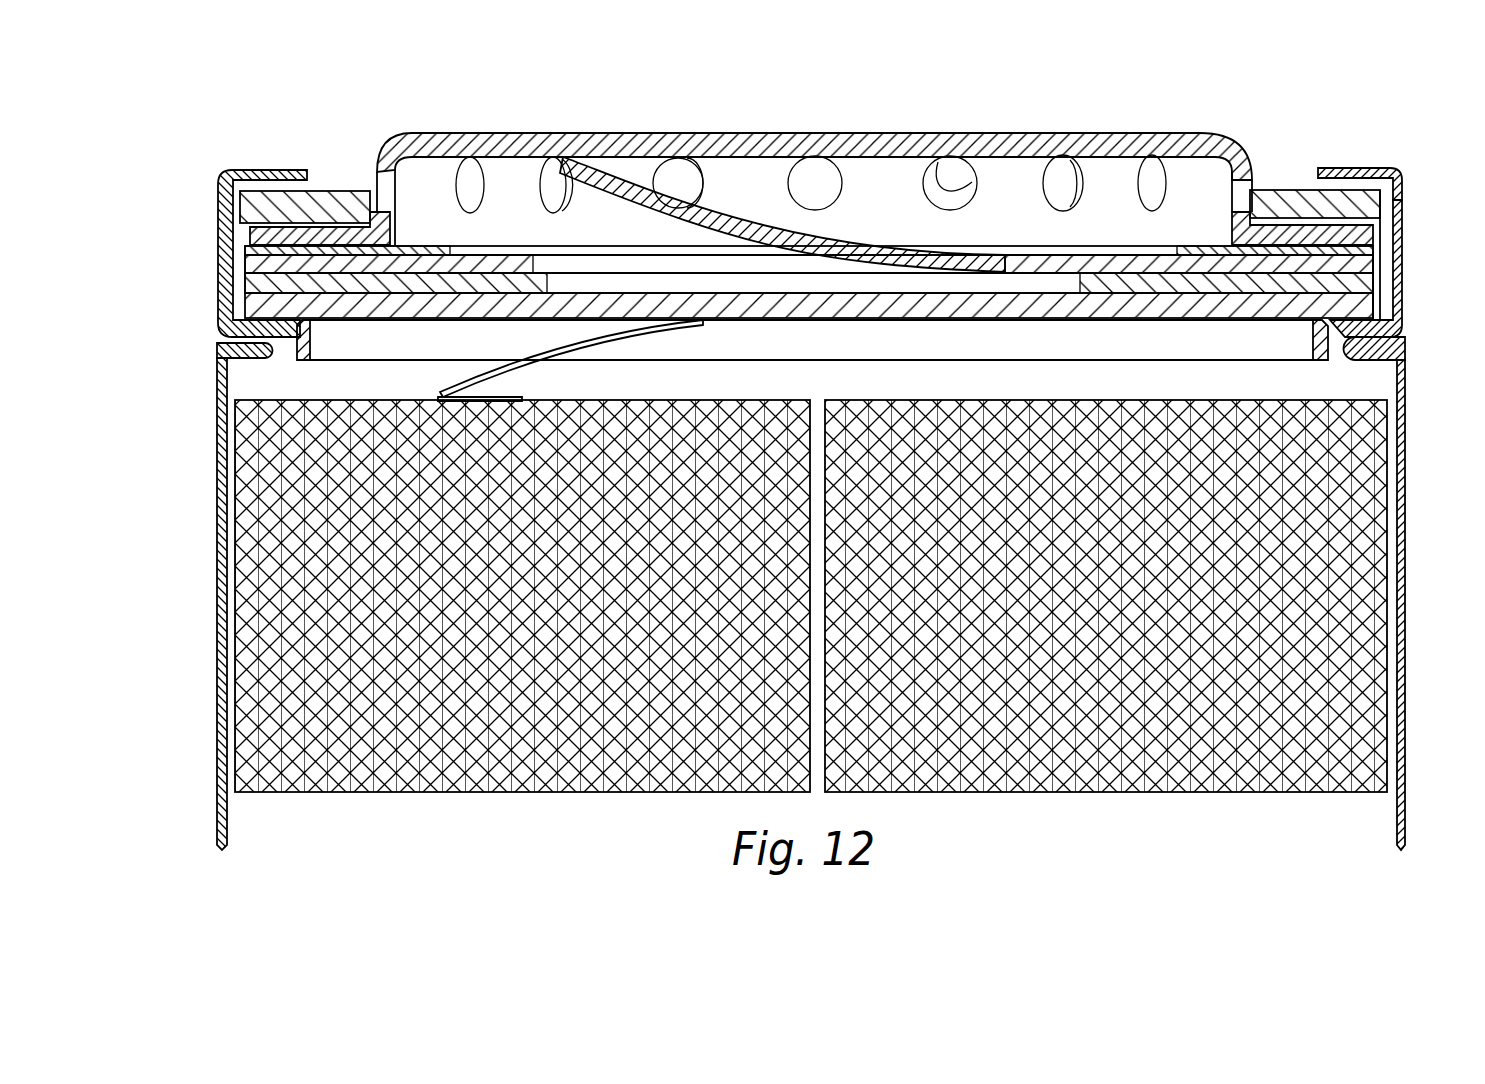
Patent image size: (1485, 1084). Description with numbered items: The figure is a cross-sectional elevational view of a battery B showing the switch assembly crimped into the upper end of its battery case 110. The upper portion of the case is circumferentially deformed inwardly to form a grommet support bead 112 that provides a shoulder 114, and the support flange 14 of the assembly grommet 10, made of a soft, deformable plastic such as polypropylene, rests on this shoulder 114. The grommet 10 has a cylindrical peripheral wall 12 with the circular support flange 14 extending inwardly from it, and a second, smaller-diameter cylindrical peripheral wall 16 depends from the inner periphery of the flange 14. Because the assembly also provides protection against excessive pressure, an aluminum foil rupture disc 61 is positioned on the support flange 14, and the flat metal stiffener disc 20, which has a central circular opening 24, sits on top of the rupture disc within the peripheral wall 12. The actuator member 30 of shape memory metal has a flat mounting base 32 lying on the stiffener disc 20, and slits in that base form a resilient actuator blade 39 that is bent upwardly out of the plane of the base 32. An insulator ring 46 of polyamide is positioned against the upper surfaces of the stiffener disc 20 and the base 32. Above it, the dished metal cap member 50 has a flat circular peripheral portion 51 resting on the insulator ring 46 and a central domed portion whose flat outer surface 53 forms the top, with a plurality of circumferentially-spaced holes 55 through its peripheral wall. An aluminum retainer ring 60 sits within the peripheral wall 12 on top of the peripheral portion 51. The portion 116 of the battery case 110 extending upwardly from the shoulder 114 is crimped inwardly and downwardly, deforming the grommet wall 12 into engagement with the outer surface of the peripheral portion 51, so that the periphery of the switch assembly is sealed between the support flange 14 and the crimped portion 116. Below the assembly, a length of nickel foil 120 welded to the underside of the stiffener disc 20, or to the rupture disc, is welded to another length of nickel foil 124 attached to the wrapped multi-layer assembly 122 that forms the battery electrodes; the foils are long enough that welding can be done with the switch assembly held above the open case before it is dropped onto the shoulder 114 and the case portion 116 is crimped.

The assembly grommet 10 is at (1402, 205).
The cylindrical peripheral wall 12 is at (1358, 178).
The circular support flange 14 is at (305, 312).
The cylindrical peripheral wall 16 is at (1325, 360).
The stiffener disc 20 is at (1228, 295).
The central circular opening 24 is at (1080, 292).
The actuator member 30 is at (1085, 247).
The flat mounting base 32 is at (484, 258).
The resilient actuator blade 39 is at (714, 207).
The insulator ring 46 is at (1372, 249).
The cap member 50 is at (1375, 236).
The flat circular peripheral portion 51 is at (322, 212).
The flat outer surface 53 is at (755, 133).
The holes 55 is at (382, 167).
The retainer ring 60 is at (1292, 190).
The foil rupture disc 61 is at (1167, 322).
The battery case 110 is at (1408, 452).
The grommet support bead 112 is at (280, 357).
The shoulder 114 is at (248, 350).
The crimped portion of the battery case 116 is at (248, 170).
The nickel foil 120 is at (560, 343).
The wrapped multi-layer assembly 122 is at (918, 399).
The nickel foil 124 is at (500, 396).
The battery B is at (1420, 388).